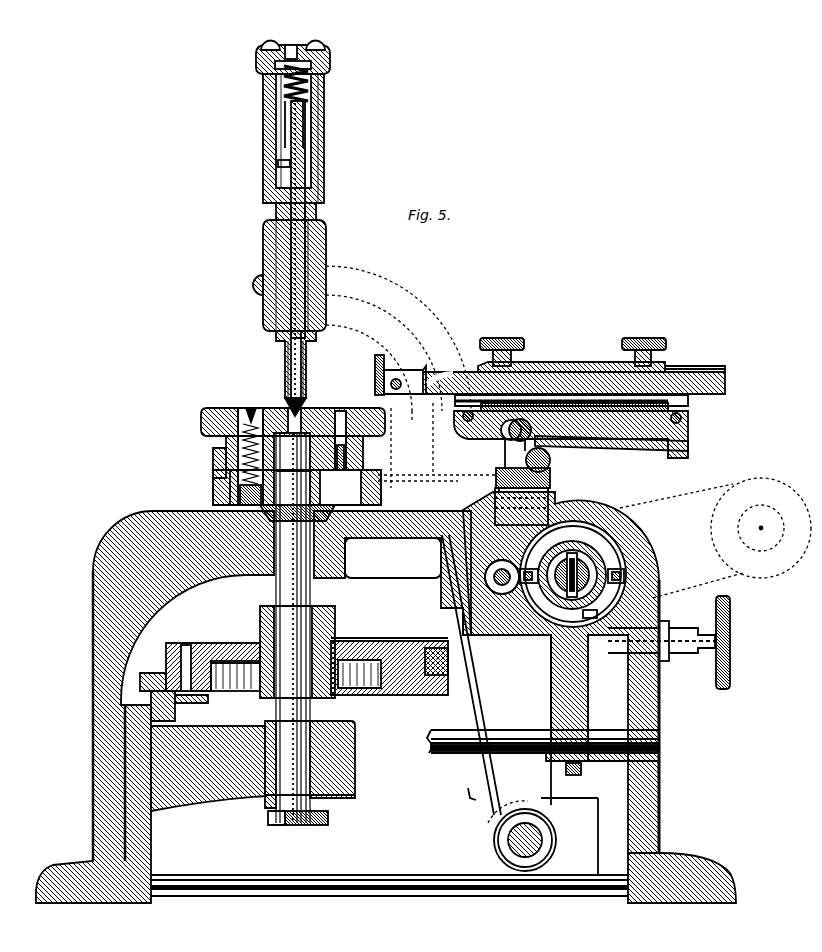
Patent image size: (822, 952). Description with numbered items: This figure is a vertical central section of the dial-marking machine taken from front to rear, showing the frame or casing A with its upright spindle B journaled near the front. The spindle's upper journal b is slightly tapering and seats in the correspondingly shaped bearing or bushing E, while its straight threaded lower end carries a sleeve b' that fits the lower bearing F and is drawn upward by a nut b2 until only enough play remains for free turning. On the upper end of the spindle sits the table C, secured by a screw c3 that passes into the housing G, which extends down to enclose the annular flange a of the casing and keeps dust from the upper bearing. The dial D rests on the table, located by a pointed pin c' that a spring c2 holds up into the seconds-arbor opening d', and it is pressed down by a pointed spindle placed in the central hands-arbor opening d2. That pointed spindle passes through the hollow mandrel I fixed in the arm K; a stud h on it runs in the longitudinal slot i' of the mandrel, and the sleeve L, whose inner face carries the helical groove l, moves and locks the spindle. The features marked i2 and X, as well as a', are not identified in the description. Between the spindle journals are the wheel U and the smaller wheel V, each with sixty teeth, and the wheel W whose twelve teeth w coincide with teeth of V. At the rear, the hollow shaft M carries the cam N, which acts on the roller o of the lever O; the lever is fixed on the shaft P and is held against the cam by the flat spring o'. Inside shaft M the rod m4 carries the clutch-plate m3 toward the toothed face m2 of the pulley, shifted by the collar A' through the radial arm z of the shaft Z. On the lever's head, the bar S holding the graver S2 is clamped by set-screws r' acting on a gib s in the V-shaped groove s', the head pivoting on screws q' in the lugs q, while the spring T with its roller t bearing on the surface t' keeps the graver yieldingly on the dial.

The sleeve L is at (310, 182).
The arm K is at (255, 246).
The hollow mandrel I is at (268, 201).
The cap slot i2 is at (290, 39).
The longitudinal slot i' is at (279, 208).
The stud h is at (268, 153).
The helical groove l is at (300, 340).
The central opening d2 is at (310, 399).
The swing path X is at (412, 377).
The dial D is at (218, 400).
The seconds-arbor opening d' is at (246, 402).
The pointed pin c' is at (255, 444).
The table C is at (218, 438).
The spring c2 is at (220, 463).
The screw c3 is at (360, 440).
The housing G is at (222, 481).
The annular flange a is at (287, 495).
The cavity a' is at (393, 558).
The bearing or bushing E is at (330, 558).
The upper journal b is at (293, 628).
The spindle B is at (268, 584).
The frame or casing A is at (386, 707).
The third wheel W is at (158, 639).
The second smaller wheel V is at (158, 661).
The wheel U is at (355, 630).
The teeth w is at (430, 656).
The bearing F is at (257, 749).
The sleeve b' is at (310, 764).
The nut b2 is at (310, 819).
The hollow shaft M is at (618, 510).
The roller o is at (572, 502).
The cam N is at (674, 543).
The radial arm z is at (587, 596).
The clutch-plate m3 is at (534, 563).
The rod m4 is at (642, 556).
The toothed face m2 is at (605, 619).
The collar A' is at (681, 541).
The shaft Z is at (520, 728).
The lever O is at (540, 506).
The flat spring o' is at (464, 675).
The shaft P is at (488, 832).
The graver S2 is at (371, 375).
The bar S is at (717, 388).
The gib s is at (571, 379).
The V-shaped groove s' is at (582, 366).
The lug q is at (563, 434).
The screw q' is at (691, 437).
The spring T is at (620, 446).
The roller t is at (531, 455).
The bearing-surface t' is at (536, 478).
The set-screws r' is at (573, 341).